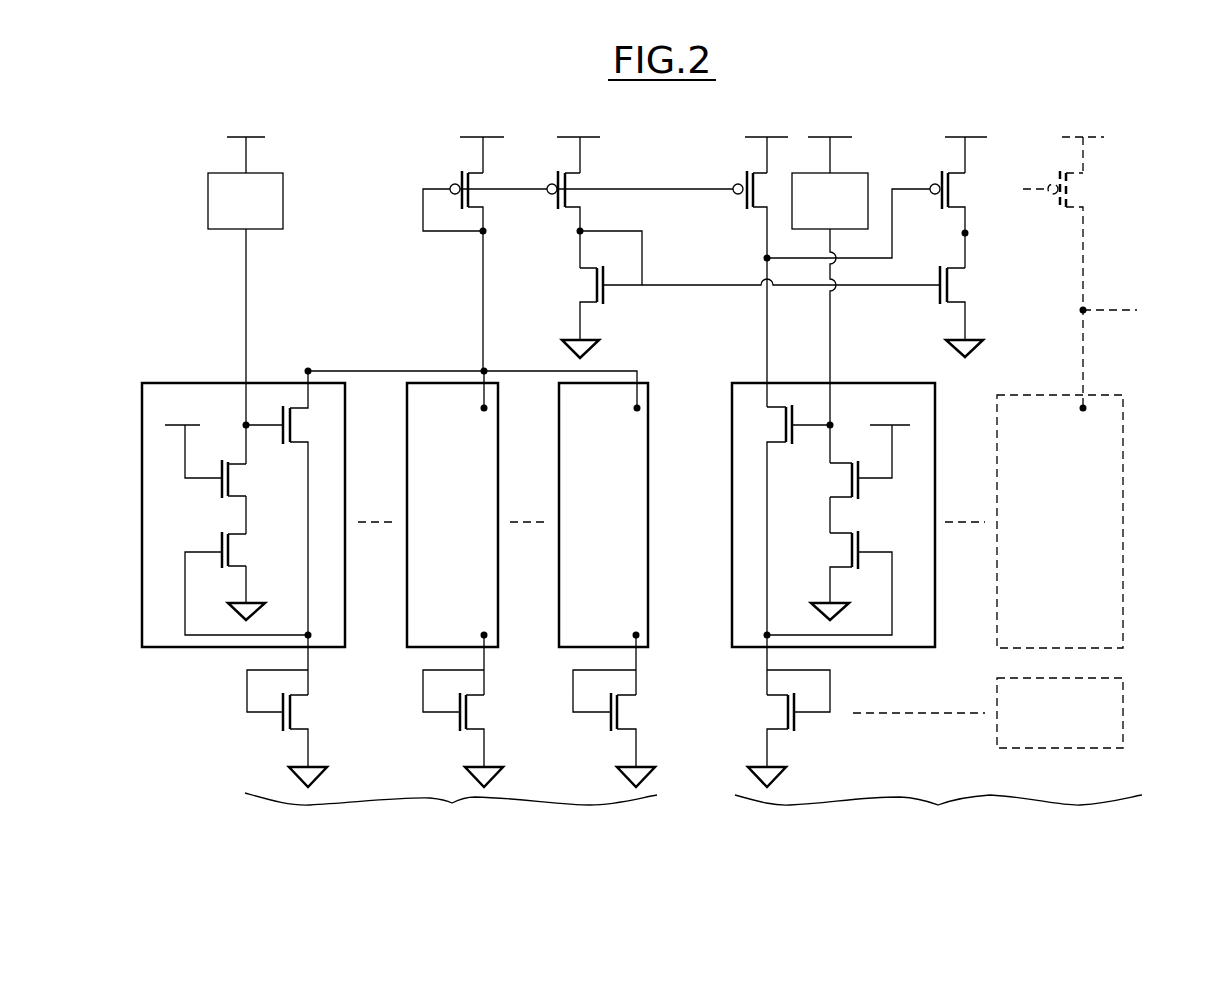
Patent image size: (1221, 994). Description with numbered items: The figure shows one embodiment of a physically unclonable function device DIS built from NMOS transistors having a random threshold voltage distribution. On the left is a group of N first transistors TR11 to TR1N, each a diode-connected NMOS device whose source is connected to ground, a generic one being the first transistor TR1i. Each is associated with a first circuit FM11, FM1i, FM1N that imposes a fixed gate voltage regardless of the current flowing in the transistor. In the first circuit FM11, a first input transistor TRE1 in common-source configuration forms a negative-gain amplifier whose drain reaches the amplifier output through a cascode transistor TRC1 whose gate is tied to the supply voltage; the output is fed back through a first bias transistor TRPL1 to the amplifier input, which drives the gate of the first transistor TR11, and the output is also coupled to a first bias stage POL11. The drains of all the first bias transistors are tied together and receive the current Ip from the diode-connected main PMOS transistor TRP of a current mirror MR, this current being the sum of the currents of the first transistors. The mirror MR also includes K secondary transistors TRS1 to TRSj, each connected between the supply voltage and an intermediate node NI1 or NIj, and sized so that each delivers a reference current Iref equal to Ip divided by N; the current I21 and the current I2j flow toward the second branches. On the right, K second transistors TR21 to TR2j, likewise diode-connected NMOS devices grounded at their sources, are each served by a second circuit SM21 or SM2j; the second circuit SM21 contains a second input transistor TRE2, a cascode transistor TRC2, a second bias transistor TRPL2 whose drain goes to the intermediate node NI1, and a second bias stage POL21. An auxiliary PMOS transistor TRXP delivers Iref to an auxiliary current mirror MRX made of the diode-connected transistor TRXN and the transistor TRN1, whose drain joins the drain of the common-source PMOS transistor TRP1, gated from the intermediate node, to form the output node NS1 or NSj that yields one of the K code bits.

The first bias stage POL11 is at (245, 269).
The first circuit FM11 is at (183, 381).
The first bias transistor TRPL1 is at (293, 392).
The cascode transistor TRC1 is at (212, 498).
The first input transistor TRE1 is at (258, 545).
The first transistor TR11 is at (277, 732).
The first circuit FM1i is at (407, 650).
The first transistor TR1i is at (455, 732).
The first circuit FM1N is at (558, 650).
The first transistor TR1N is at (606, 732).
The main PMOS transistor TRP is at (440, 172).
The current Ip is at (480, 269).
The current mirror MR is at (661, 183).
The first auxiliary PMOS transistor TRXP is at (590, 180).
The reference current Iref is at (577, 243).
The second auxiliary NMOS transistor TRXN is at (567, 305).
The auxiliary current mirror MRX is at (687, 280).
The secondary transistor TRS1 is at (738, 176).
The intermediate node NI1 is at (831, 230).
The current I21 is at (764, 344).
The second bias stage POL21 is at (830, 288).
The fourth auxiliary PMOS transistor TRP1 is at (921, 172).
The output node NS1 is at (968, 232).
The third auxiliary transistor TRN1 is at (978, 305).
The secondary transistor TRSj is at (1036, 172).
The intermediate node NIj is at (1080, 308).
The output node NSj is at (1137, 308).
The current I2j is at (1080, 344).
The physically unclonable function device DIS is at (1120, 126).
The second circuit SM21 is at (734, 650).
The second bias transistor TRPL2 is at (745, 427).
The cascode transistor TRC2 is at (866, 500).
The second input transistor TRE2 is at (816, 543).
The second transistor TR21 is at (752, 732).
The second circuit SM2j is at (1125, 515).
The second transistor TR2j is at (988, 713).
The number of first transistors N is at (451, 812).
The number of second transistors K is at (938, 813).